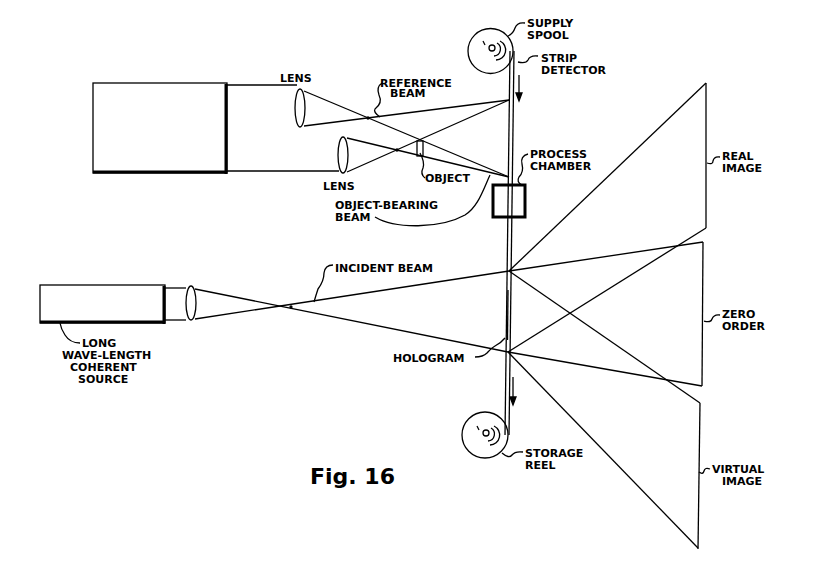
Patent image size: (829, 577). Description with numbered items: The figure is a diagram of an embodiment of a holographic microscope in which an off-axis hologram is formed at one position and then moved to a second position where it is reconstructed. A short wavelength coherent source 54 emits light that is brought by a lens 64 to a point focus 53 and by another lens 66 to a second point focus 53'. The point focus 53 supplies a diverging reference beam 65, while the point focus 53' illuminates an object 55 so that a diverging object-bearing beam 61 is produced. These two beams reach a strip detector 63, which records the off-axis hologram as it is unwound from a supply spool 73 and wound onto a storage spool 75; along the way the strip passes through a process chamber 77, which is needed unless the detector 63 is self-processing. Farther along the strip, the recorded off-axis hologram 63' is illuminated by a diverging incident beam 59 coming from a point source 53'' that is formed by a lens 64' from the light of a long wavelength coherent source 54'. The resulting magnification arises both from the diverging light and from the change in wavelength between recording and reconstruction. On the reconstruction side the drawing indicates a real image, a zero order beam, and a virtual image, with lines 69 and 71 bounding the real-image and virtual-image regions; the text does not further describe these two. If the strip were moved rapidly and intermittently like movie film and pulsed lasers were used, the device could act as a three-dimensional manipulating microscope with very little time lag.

The short wavelength coherent source 54 is at (160, 117).
The lens 64 is at (282, 108).
The lens 66 is at (338, 155).
The point focus 53 is at (351, 102).
The point focus 53' is at (390, 163).
The point source 53'' is at (295, 293).
The diverging reference beam 65 is at (472, 102).
The diverging object-bearing beam 61 is at (455, 124).
The object 55 is at (424, 147).
The supply spool 73 is at (468, 50).
The storage spool 75 is at (472, 414).
The process chamber 77 is at (527, 202).
The strip detector 63 is at (529, 243).
The off-axis hologram 63' is at (529, 315).
The diverging incident beam 59 is at (340, 295).
The long wavelength coherent source 54' is at (102, 293).
The lens 64' is at (197, 292).
The real image beam 69 is at (624, 160).
The virtual image beam 71 is at (642, 495).